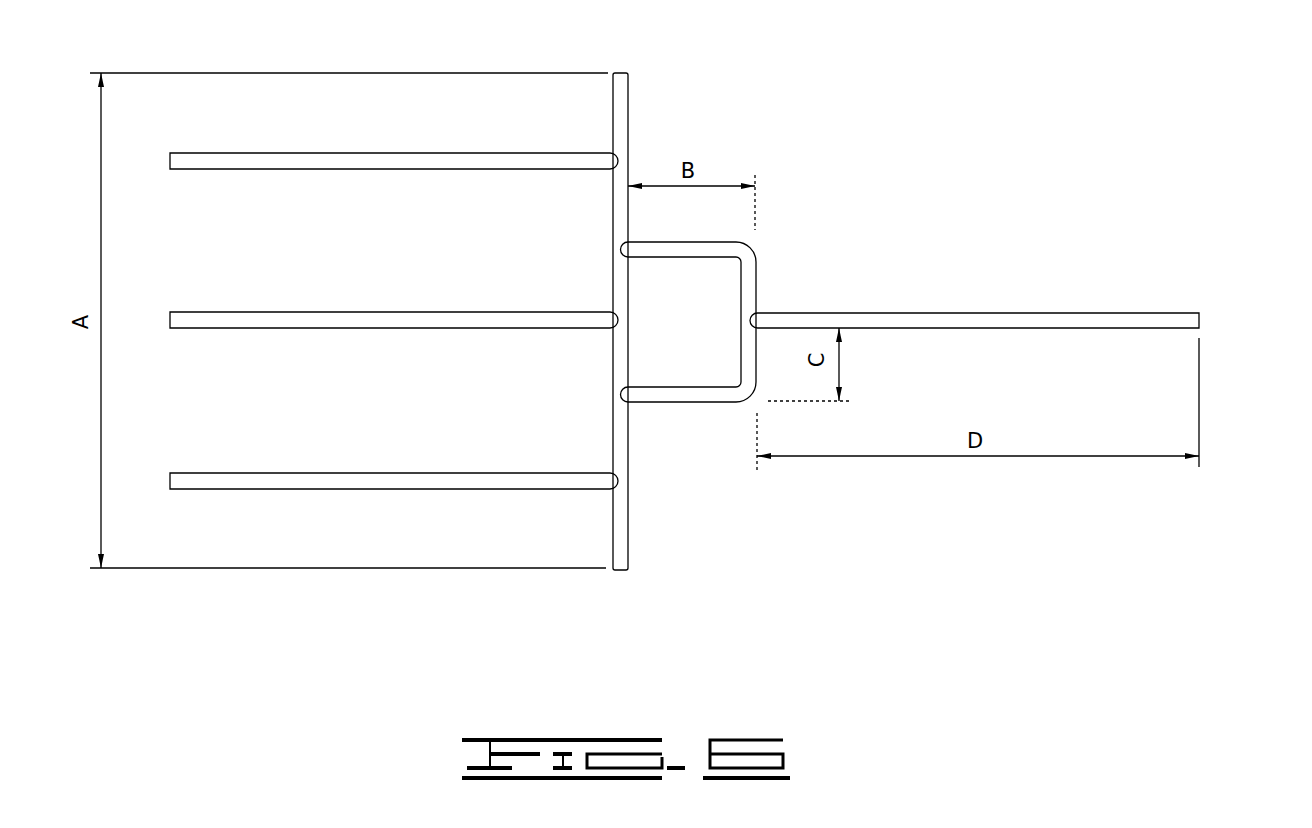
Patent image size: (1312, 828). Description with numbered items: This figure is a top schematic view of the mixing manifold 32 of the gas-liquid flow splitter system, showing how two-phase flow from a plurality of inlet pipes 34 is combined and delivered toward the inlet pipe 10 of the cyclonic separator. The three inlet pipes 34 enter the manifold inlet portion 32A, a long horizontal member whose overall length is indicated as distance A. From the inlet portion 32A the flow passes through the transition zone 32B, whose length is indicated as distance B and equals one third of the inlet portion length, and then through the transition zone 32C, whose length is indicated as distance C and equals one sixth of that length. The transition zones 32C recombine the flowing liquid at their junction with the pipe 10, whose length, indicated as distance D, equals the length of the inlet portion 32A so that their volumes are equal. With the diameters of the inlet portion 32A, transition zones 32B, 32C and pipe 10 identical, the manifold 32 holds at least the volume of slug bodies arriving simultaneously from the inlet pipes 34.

The pipe 10 is at (1155, 312).
The mixing manifold 32 is at (737, 361).
The manifold inlet portion 32A is at (628, 91).
The transition zone 32B is at (688, 404).
The transition zone 32C is at (756, 278).
The inlet pipes 34 is at (280, 152).